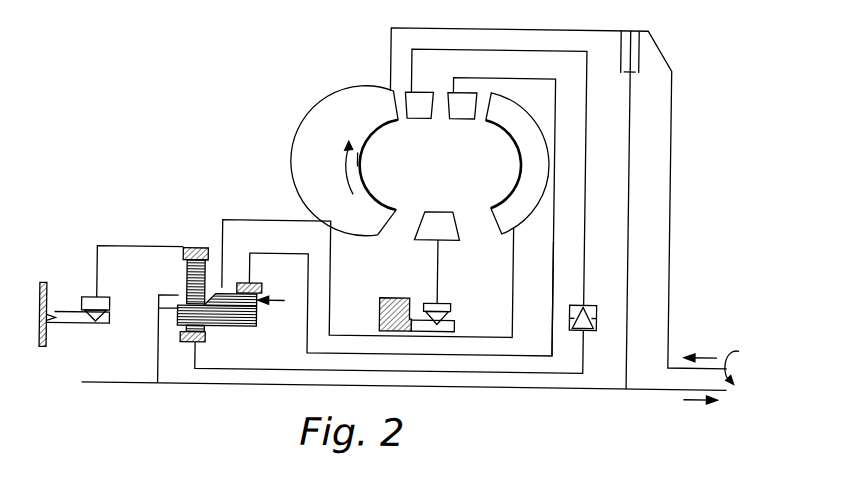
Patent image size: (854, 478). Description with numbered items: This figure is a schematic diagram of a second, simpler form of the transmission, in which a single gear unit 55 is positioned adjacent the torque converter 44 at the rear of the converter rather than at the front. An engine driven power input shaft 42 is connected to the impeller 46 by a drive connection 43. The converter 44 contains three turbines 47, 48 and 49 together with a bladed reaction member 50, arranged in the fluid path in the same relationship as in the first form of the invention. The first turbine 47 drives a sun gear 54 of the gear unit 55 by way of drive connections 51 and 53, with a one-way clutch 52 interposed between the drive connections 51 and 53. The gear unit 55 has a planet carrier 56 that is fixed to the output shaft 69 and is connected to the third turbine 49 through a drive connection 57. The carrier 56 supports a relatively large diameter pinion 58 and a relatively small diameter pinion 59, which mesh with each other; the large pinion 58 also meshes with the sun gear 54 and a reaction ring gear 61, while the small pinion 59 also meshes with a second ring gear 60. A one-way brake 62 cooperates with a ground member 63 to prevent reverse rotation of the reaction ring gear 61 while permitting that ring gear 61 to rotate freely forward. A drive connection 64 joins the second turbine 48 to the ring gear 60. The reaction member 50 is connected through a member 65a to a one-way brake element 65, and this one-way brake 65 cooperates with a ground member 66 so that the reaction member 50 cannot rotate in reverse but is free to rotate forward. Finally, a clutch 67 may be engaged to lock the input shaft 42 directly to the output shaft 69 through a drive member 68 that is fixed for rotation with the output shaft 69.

The power input shaft 42 is at (718, 363).
The drive connection 43 is at (671, 98).
The torque converter 44 is at (358, 121).
The impeller 46 is at (357, 160).
The turbine 47 is at (430, 118).
The turbine 48 is at (468, 118).
The turbine 49 is at (526, 177).
The reaction member 50 is at (438, 212).
The drive connection 51 is at (586, 181).
The one-way clutch 52 is at (585, 330).
The drive connection 53 is at (307, 371).
The sun gear 54 is at (207, 345).
The gear unit 55 is at (281, 307).
The planet carrier 56 is at (160, 369).
The drive connection 57 is at (237, 222).
The pinion 58 is at (187, 276).
The pinion 59 is at (240, 322).
The ring gear 60 is at (256, 285).
The ring gear 61 is at (196, 250).
The one-way brake 62 is at (94, 300).
The ground member 63 is at (68, 327).
The drive connection 64 is at (553, 277).
The one-way brake element 65 is at (452, 305).
The member 65a is at (439, 257).
The ground member 66 is at (457, 327).
The clutch 67 is at (616, 44).
The drive member 68 is at (629, 141).
The output shaft 69 is at (632, 388).